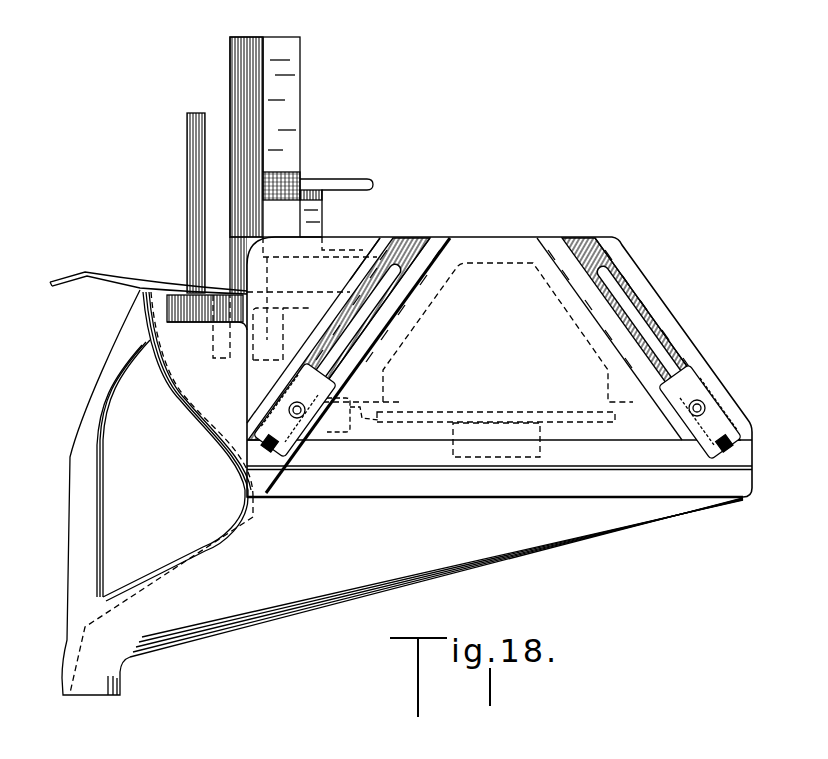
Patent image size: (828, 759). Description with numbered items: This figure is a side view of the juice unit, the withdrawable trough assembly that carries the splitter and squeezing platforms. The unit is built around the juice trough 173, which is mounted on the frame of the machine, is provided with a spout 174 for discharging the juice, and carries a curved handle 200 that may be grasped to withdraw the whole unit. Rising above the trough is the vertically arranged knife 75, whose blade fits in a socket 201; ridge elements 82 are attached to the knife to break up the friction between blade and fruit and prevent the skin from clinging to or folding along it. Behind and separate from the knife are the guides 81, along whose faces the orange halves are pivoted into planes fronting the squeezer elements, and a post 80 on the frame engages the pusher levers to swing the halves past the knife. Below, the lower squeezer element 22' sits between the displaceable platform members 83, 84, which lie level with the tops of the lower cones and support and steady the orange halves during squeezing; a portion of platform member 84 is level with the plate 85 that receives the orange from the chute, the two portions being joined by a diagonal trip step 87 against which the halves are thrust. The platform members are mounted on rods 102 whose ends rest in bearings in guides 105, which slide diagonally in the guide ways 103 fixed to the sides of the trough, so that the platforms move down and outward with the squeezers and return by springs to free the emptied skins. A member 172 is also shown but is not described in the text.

The lower squeezer element 22' is at (499, 350).
The knife 75 is at (243, 60).
The post 80 is at (192, 163).
The guide 81 is at (347, 180).
The ridge element 82 is at (282, 177).
The platform member 83 is at (632, 403).
The platform member 84 is at (332, 437).
The plate 85 is at (70, 272).
The trip step 87 is at (353, 421).
The rod 102 is at (290, 404).
The guide way 103 is at (380, 253).
The guide 105 is at (323, 387).
The base plate 172 is at (540, 452).
The juice trough 173 is at (190, 430).
The spout 174 is at (187, 630).
The curved handle 200 is at (90, 400).
The socket 201 is at (237, 355).